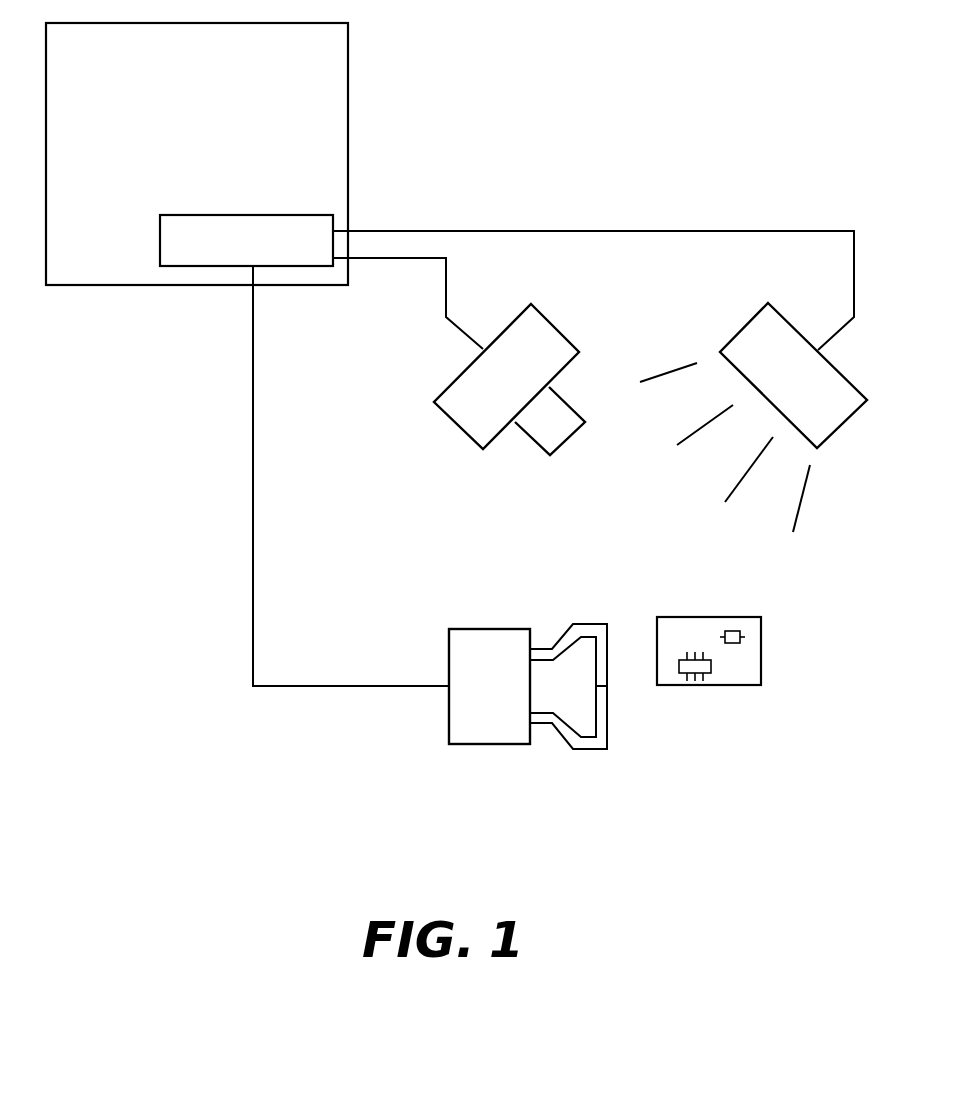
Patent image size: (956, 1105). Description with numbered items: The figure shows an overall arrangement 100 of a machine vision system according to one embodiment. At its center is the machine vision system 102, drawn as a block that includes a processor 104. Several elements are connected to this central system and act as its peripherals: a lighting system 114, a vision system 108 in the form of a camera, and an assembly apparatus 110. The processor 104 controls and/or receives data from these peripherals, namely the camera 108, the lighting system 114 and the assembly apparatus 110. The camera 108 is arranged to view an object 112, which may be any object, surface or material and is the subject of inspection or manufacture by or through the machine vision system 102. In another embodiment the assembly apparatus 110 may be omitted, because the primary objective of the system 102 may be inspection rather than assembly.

The machine vision inspection system 100 is at (626, 133).
The machine vision system 102 is at (350, 47).
The processor 104 is at (218, 266).
The vision system 108 is at (470, 438).
The assembly apparatus 110 is at (449, 735).
The object 112 is at (761, 685).
The lighting system 114 is at (757, 320).